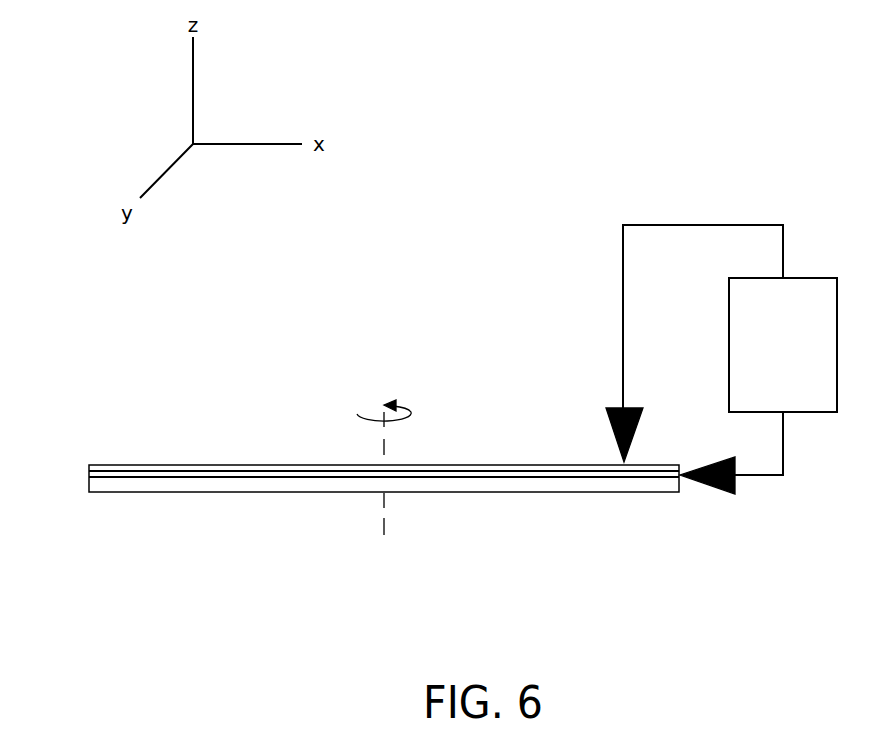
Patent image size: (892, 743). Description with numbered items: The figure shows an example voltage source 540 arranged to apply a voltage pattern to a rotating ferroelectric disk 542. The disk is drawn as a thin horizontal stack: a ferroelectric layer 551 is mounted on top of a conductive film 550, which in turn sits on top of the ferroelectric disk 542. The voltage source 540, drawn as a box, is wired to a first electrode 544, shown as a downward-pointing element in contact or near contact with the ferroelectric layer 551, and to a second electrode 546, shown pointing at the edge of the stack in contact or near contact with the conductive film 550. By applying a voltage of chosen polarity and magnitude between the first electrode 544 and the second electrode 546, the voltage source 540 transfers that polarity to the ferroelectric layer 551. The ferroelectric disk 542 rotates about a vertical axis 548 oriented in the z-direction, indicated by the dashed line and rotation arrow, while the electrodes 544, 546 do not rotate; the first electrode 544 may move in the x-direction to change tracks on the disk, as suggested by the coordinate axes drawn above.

The voltage source 540 is at (783, 345).
The ferroelectric disk 542 is at (175, 492).
The first electrode 544 is at (606, 416).
The second electrode 546 is at (722, 488).
The axis 548 is at (384, 537).
The conductive film 550 is at (89, 477).
The ferroelectric layer 551 is at (157, 465).